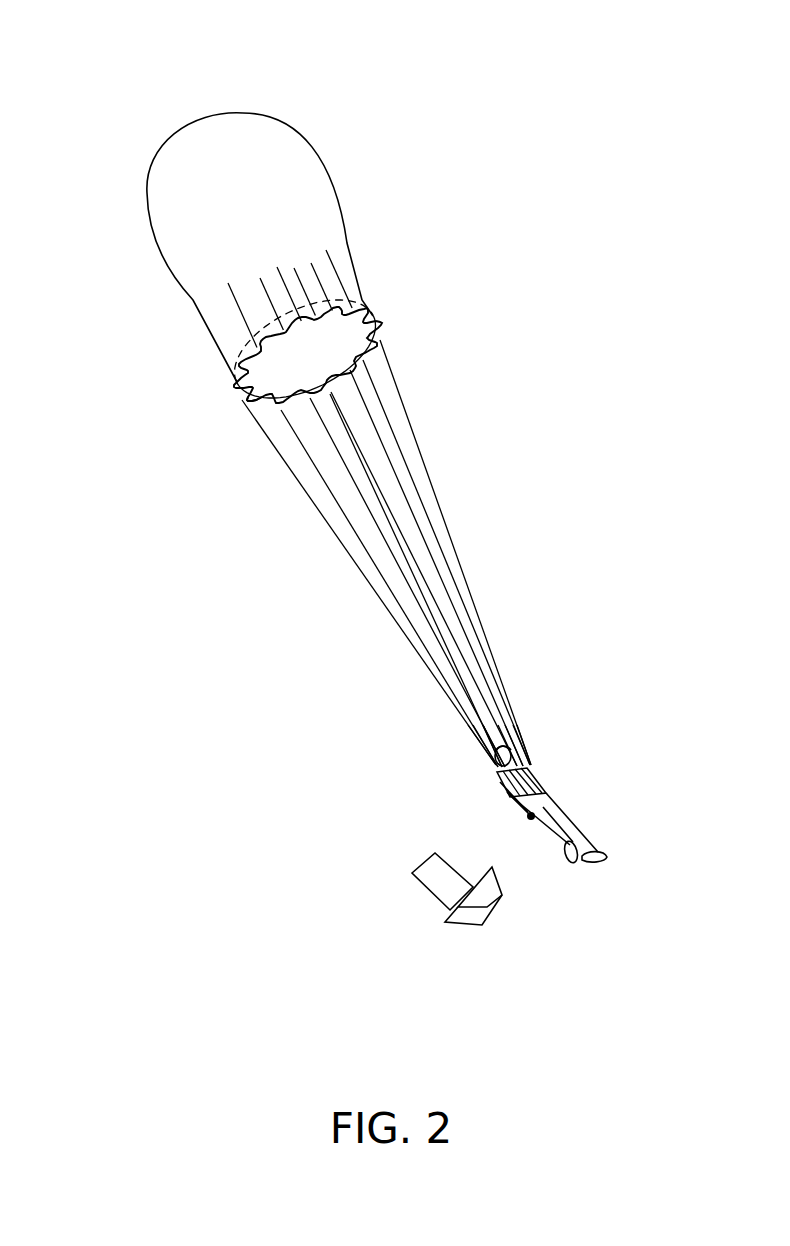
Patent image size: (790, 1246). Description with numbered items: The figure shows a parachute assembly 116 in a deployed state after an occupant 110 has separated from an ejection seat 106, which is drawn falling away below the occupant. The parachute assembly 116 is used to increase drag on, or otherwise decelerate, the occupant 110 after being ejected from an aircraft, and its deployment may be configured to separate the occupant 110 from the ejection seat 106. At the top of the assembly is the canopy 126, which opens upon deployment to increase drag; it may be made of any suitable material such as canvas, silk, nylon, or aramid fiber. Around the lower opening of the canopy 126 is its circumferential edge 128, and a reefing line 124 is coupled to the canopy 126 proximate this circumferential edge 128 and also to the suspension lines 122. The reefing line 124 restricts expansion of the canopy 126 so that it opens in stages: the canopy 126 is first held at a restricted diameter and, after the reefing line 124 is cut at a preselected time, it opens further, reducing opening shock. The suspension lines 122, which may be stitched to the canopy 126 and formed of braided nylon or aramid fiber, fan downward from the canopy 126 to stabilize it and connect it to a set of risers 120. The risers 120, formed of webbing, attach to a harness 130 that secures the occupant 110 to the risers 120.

The parachute assembly 116 is at (172, 78).
The canopy 126 is at (219, 201).
The circumferential edge 128 is at (353, 300).
The reefing line 124 is at (273, 405).
The suspension lines 122 is at (417, 430).
The risers 120 is at (527, 684).
The harness 130 is at (528, 768).
The occupant 110 is at (465, 770).
The ejection seat 106 is at (440, 882).